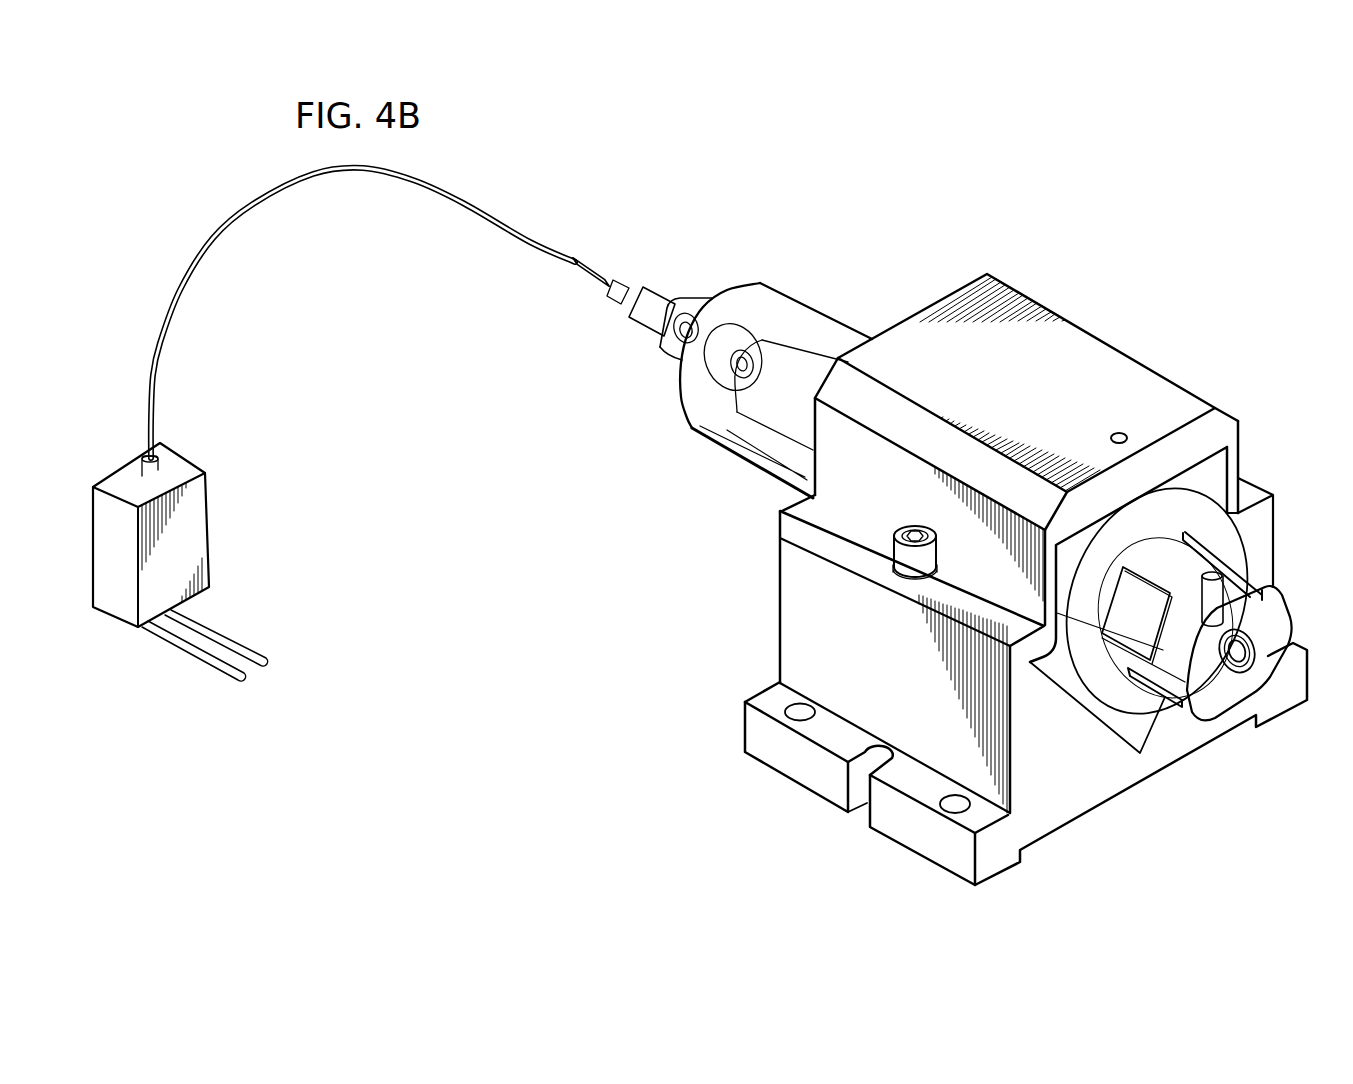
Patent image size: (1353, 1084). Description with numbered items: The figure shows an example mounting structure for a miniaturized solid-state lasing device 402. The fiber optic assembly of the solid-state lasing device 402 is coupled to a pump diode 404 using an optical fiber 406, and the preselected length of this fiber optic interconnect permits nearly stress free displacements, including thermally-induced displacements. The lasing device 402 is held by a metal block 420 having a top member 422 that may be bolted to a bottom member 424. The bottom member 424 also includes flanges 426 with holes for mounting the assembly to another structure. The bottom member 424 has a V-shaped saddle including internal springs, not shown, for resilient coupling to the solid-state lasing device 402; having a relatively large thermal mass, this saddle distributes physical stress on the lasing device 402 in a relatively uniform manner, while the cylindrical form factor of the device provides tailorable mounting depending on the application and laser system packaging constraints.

The solid-state lasing device 402 is at (750, 286).
The pump diode 404 is at (208, 527).
The optical fiber 406 is at (253, 207).
The metal block 420 is at (1110, 343).
The top member 422 is at (1172, 392).
The bottom member 424 is at (1142, 780).
The flanges 426 is at (912, 850).